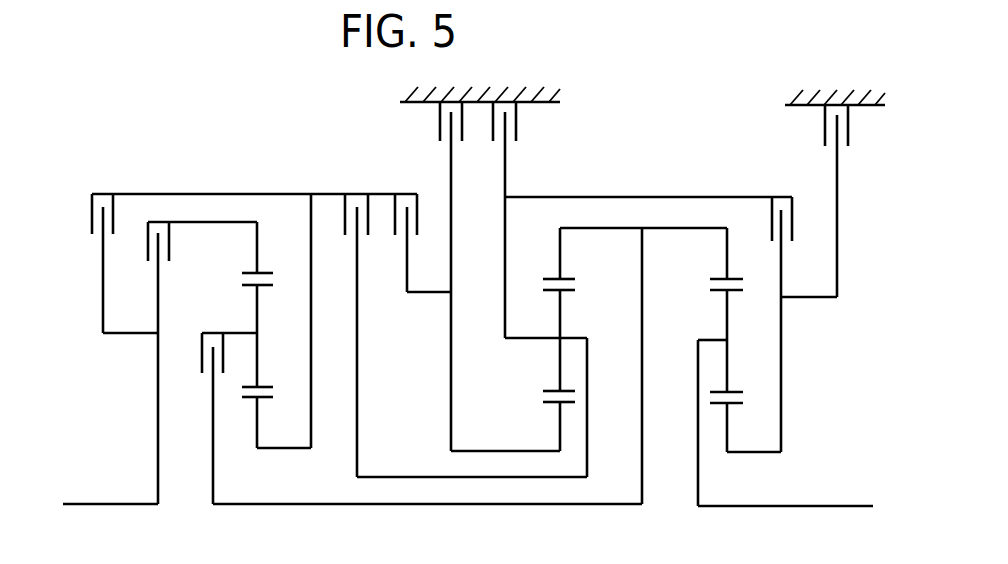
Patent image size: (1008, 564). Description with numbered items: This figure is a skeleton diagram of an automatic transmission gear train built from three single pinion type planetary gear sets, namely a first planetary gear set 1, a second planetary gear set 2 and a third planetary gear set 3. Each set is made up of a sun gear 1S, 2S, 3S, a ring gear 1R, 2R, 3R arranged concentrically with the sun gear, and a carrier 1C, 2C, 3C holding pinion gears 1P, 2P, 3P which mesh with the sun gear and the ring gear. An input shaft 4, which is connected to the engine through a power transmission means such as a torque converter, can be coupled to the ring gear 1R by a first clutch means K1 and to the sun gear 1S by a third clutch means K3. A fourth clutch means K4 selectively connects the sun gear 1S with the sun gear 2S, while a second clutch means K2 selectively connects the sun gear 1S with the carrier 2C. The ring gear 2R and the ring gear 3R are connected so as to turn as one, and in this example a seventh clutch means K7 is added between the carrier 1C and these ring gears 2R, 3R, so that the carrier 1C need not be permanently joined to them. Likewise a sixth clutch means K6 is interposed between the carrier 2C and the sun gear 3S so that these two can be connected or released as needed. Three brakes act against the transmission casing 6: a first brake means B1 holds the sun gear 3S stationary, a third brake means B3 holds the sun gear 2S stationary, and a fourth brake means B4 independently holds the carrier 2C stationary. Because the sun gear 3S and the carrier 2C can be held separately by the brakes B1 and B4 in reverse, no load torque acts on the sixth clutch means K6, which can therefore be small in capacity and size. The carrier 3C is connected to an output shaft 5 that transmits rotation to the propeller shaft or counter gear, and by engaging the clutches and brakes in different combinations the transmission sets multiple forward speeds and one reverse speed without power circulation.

The first planetary gear set 1 is at (260, 369).
The second planetary gear set 2 is at (589, 389).
The third planetary gear set 3 is at (724, 391).
The input shaft 4 is at (96, 503).
The output shaft 5 is at (800, 505).
The transmission casing 6 is at (508, 98).
The first clutch means K1 is at (201, 348).
The second clutch means K2 is at (465, 321).
The third clutch means K3 is at (125, 249).
The fourth clutch means K4 is at (421, 228).
The sixth clutch means K6 is at (781, 311).
The seventh clutch means K7 is at (229, 405).
The first brake means B1 is at (832, 201).
The third brake means B3 is at (431, 276).
The fourth brake means B4 is at (642, 220).
The ring gear of the first planetary gear set 1R is at (264, 271).
The carrier of the first planetary gear set 1C is at (238, 331).
The pinion gears of the first planetary gear set 1P is at (261, 385).
The sun gear of the first planetary gear set 1S is at (256, 466).
The ring gear of the second planetary gear set 2R is at (576, 281).
The carrier of the second planetary gear set 2C is at (575, 337).
The pinion gears of the second planetary gear set 2P is at (544, 389).
The sun gear of the second planetary gear set 2S is at (544, 403).
The ring gear of the third planetary gear set 3R is at (733, 277).
The carrier of the third planetary gear set 3C is at (713, 336).
The pinion gears of the third planetary gear set 3P is at (732, 390).
The sun gear of the third planetary gear set 3S is at (739, 423).